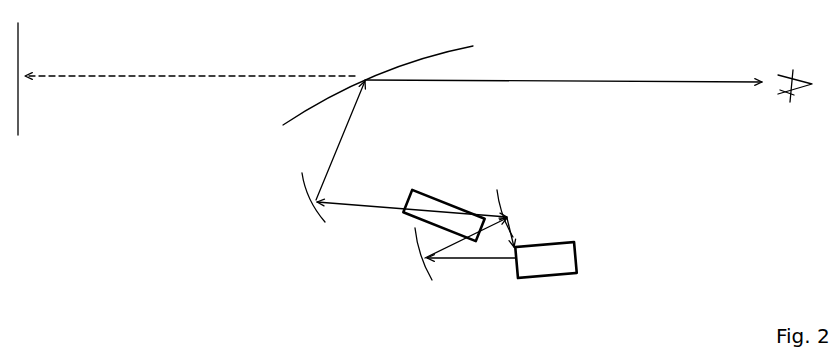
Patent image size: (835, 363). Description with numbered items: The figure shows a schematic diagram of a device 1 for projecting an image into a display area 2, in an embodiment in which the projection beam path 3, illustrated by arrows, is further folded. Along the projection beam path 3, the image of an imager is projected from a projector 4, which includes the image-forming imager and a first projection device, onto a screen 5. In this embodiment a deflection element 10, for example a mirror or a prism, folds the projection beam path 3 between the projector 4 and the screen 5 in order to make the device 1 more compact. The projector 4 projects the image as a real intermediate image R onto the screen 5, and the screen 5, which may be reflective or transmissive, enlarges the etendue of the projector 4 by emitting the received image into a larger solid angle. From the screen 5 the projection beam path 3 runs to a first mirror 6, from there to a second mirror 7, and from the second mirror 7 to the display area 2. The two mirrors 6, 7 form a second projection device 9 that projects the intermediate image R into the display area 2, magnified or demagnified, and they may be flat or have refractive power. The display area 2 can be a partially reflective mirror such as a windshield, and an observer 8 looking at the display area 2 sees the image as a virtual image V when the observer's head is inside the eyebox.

The device 1 is at (341, 80).
The display area 2 is at (377, 70).
The projection beam path 3 is at (378, 227).
The projector 4 is at (440, 194).
The screen 5 is at (425, 273).
The first mirror 6 is at (505, 204).
The second mirror 7 is at (303, 197).
The observer 8 is at (770, 77).
The second projection device 9 is at (602, 180).
The deflection element 10 is at (578, 260).
The virtual image V is at (33, 111).
The real intermediate image R is at (443, 270).